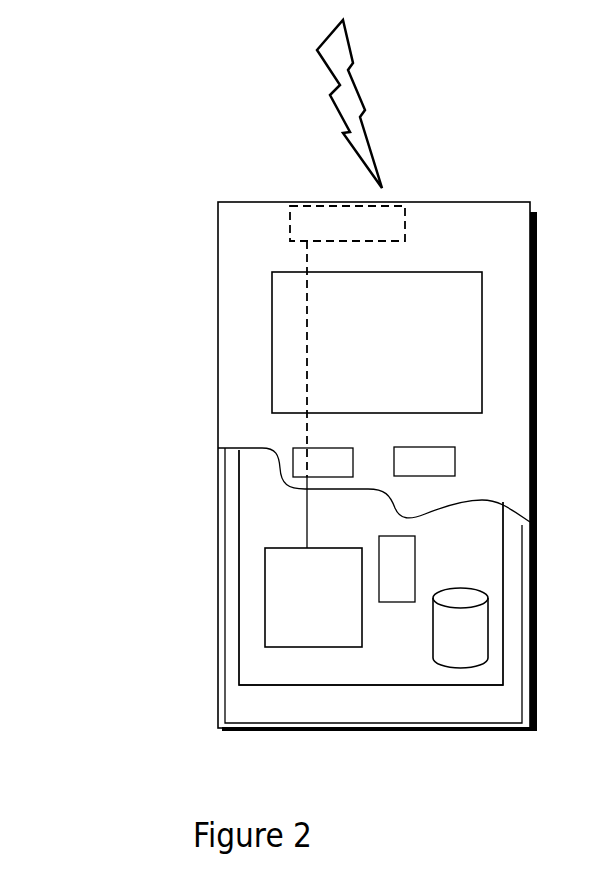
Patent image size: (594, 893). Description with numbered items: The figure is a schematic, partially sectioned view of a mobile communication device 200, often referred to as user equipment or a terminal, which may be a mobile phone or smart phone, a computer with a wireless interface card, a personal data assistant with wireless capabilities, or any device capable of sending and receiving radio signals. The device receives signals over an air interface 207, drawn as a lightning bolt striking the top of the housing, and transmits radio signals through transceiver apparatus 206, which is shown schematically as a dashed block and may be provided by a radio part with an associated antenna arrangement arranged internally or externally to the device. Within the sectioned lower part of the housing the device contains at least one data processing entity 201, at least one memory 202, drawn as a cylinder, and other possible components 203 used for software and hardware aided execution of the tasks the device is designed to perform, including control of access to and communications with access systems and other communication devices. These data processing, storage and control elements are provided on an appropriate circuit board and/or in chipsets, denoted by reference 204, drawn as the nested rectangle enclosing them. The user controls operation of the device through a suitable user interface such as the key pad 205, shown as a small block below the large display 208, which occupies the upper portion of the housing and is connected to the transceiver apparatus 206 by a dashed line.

The mobile device 200 is at (220, 245).
The data processing entity 201 is at (272, 580).
The memory 202 is at (453, 639).
The other possible components 203 is at (397, 552).
The circuit board 204 is at (265, 667).
The key pad 205 is at (297, 463).
The transceiver apparatus 206 is at (395, 217).
The air interface 207 is at (381, 128).
The display 208 is at (288, 328).